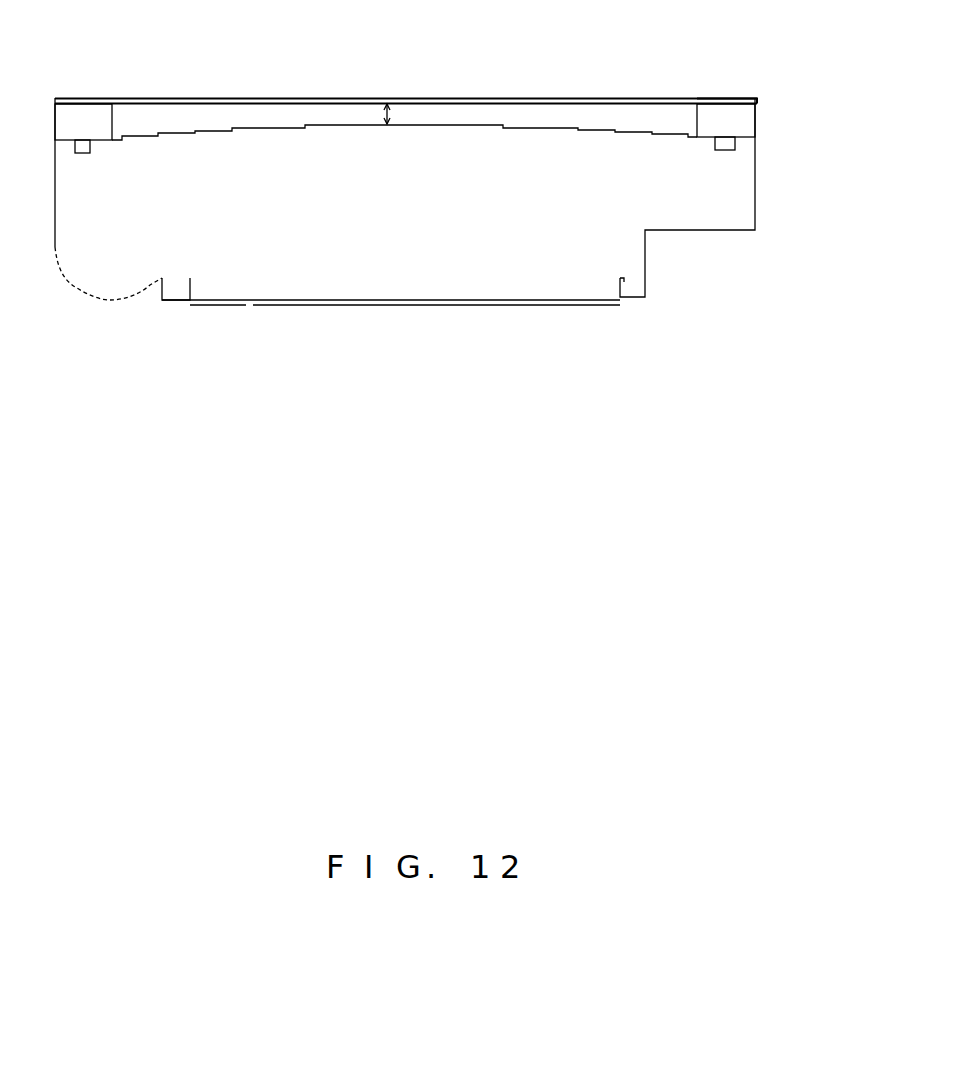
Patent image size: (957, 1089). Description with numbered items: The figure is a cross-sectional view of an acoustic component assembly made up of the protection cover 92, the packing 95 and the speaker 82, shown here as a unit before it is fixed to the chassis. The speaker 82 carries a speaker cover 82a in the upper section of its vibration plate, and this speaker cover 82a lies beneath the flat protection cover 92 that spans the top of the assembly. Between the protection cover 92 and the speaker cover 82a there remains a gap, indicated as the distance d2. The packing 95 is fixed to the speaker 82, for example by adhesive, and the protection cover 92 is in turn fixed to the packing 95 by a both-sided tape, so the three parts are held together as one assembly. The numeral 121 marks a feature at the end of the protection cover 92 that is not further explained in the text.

The speaker 82 is at (715, 212).
The speaker cover 82a is at (295, 132).
The protection cover 92 is at (430, 100).
The packing 95 is at (753, 125).
The end portion of plate 121 is at (760, 97).
The distance d2 is at (387, 103).